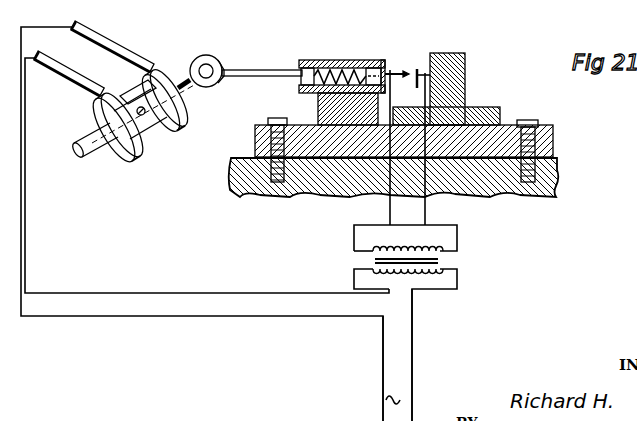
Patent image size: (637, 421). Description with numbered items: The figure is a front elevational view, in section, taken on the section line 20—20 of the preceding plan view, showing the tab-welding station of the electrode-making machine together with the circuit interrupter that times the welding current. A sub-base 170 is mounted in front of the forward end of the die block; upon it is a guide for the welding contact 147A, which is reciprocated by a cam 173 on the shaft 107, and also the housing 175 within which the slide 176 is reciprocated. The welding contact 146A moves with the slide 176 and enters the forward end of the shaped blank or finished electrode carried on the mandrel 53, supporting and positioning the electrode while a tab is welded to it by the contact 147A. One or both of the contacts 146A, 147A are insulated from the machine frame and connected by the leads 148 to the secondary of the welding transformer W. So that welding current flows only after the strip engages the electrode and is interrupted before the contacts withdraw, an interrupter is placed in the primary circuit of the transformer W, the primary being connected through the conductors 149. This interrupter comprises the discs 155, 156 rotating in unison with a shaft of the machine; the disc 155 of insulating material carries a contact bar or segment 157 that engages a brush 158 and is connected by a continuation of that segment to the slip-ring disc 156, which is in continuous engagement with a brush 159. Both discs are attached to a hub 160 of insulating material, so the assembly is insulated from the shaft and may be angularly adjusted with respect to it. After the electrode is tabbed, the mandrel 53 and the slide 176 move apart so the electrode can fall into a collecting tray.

The brush 158 is at (108, 42).
The brush 159 is at (68, 76).
The contact bar or segment 157 is at (126, 86).
The hub 160 is at (145, 118).
The disc 155 is at (181, 128).
The disc 156 is at (142, 157).
The shaft 107 is at (87, 147).
The cam 173 is at (218, 64).
The welding contact 147A is at (405, 71).
The mandrel 53 is at (417, 69).
The welding contact 146A is at (426, 72).
The slide 176 is at (445, 55).
The housing 175 is at (486, 106).
The sub-base 170 is at (541, 152).
The frame 20 is at (291, 196).
The wires 148 is at (390, 220).
The welding transformer W is at (440, 262).
The wires 149 is at (378, 340).